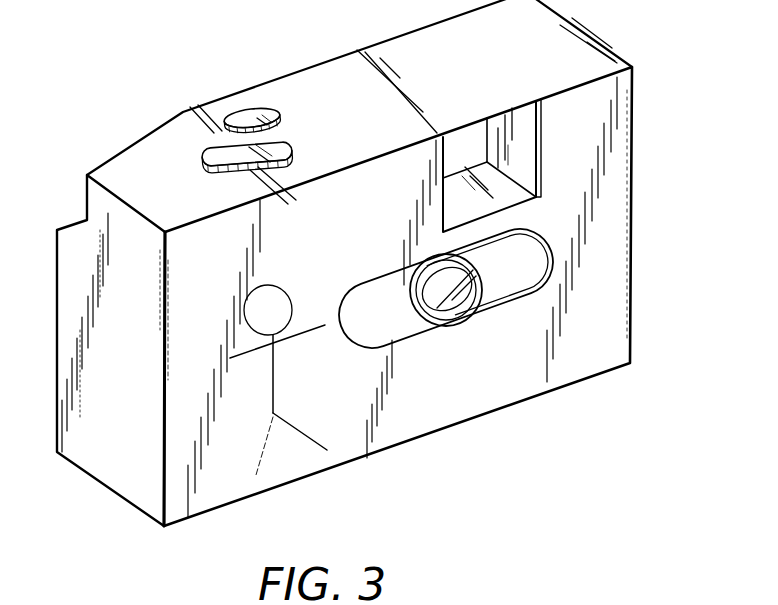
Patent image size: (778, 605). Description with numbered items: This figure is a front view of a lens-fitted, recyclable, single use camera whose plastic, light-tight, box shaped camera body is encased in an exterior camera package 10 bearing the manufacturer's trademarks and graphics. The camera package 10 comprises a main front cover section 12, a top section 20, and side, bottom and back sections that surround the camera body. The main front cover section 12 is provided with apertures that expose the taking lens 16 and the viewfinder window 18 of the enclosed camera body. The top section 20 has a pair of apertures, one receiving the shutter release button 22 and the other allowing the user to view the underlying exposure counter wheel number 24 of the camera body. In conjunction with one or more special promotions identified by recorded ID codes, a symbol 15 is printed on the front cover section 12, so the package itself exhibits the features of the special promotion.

The camera package 10 is at (214, 284).
The main front cover section 12 is at (428, 402).
The symbol 15 is at (310, 443).
The taking lens 16 is at (453, 322).
The viewfinder window 18 is at (541, 152).
The top section 20 is at (318, 80).
The shutter release button 22 is at (205, 146).
The exposure counter wheel number 24 is at (250, 109).